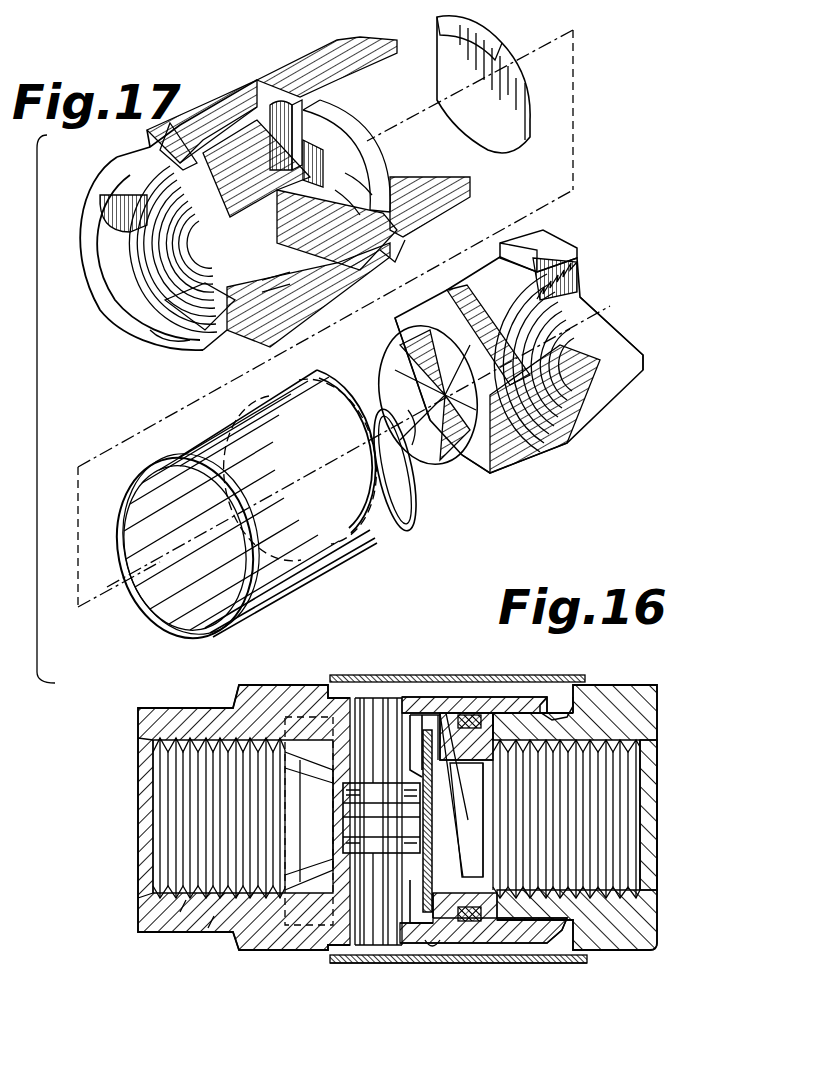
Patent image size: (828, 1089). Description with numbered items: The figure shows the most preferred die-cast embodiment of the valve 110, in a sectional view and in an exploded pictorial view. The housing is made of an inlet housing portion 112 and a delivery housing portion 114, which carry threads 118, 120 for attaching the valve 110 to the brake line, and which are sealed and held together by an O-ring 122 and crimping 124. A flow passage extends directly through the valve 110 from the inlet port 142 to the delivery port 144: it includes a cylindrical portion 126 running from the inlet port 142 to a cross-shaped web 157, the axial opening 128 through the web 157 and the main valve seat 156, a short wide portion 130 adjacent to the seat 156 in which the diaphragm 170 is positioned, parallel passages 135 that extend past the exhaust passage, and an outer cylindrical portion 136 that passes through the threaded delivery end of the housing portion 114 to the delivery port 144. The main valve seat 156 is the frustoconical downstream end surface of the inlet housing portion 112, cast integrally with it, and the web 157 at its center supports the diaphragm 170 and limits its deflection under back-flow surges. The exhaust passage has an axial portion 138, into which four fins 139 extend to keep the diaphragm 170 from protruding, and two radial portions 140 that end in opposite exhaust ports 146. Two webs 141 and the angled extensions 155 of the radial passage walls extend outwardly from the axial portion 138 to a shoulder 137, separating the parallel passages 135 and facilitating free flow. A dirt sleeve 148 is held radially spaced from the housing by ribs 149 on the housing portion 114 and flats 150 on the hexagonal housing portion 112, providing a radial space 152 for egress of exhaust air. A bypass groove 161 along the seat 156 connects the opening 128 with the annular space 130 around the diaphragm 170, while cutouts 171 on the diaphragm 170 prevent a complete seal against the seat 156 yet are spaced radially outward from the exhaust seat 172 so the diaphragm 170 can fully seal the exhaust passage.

In FIG. 16, the valve 110 is at (120, 957).
In FIG. 17, the inlet housing portion 112 is at (606, 250).
In FIG. 16, the inlet housing portion 112 is at (638, 952).
In FIG. 17, the delivery housing portion 114 is at (108, 352).
In FIG. 16, the delivery housing portion 114 is at (238, 692).
In FIG. 17, the threads 118 is at (520, 357).
In FIG. 16, the threads 118 is at (622, 738).
In FIG. 17, the threads 120 is at (125, 295).
In FIG. 16, the threads 120 is at (162, 752).
In FIG. 17, the O-ring 122 is at (408, 538).
In FIG. 16, the O-ring 122 is at (468, 718).
In FIG. 16, the crimping 124 is at (562, 708).
In FIG. 17, the cylindrical portion of flow passage 126 is at (570, 293).
In FIG. 16, the cylindrical portion of flow passage 126 is at (620, 768).
In FIG. 17, the axial opening 128 is at (417, 372).
In FIG. 16, the axial opening 128 is at (440, 832).
In FIG. 16, the short wide portion of flow passage 130 is at (433, 712).
In FIG. 17, the parallel passages 135 is at (143, 282).
In FIG. 16, the parallel passages 135 is at (298, 826).
In FIG. 17, the cylindrical portion of flow passage 136 is at (168, 358).
In FIG. 16, the cylindrical portion of flow passage 136 is at (178, 798).
In FIG. 17, the shoulder 137 is at (395, 262).
In FIG. 16, the shoulder 137 is at (284, 956).
In FIG. 17, the axial portion of exhaust passage 138 is at (345, 173).
In FIG. 16, the axial portion of exhaust passage 138 is at (500, 850).
In FIG. 17, the fins 139 is at (335, 190).
In FIG. 16, the fins 139 is at (373, 855).
In FIG. 17, the radial portions of exhaust passage 140 is at (290, 100).
In FIG. 16, the radial portions of exhaust passage 140 is at (414, 935).
In FIG. 17, the webs 141 is at (207, 147).
In FIG. 16, the webs 141 is at (298, 870).
In FIG. 17, the inlet port 142 is at (640, 362).
In FIG. 16, the inlet port 142 is at (656, 880).
In FIG. 17, the delivery port 144 is at (107, 217).
In FIG. 16, the delivery port 144 is at (293, 882).
In FIG. 17, the exhaust ports 146 is at (278, 100).
In FIG. 16, the exhaust ports 146 is at (360, 698).
In FIG. 17, the dirt sleeve 148 is at (146, 619).
In FIG. 16, the dirt sleeve 148 is at (560, 965).
In FIG. 17, the ribs 149 is at (250, 100).
In FIG. 17, the flats 150 is at (507, 232).
In FIG. 16, the radial space 152 is at (508, 947).
In FIG. 17, the extensions of radial exhaust passage walls 155 is at (262, 280).
In FIG. 16, the extensions of radial exhaust passage walls 155 is at (208, 928).
In FIG. 17, the main valve seat 156 is at (473, 478).
In FIG. 16, the main valve seat 156 is at (470, 800).
In FIG. 17, the cross-shaped web 157 is at (462, 482).
In FIG. 16, the cross-shaped web 157 is at (471, 818).
In FIG. 17, the bypass groove 161 is at (437, 475).
In FIG. 16, the bypass groove 161 is at (433, 947).
In FIG. 17, the diaphragm 170 is at (518, 30).
In FIG. 16, the diaphragm 170 is at (419, 716).
In FIG. 17, the cutouts 171 is at (440, 58).
In FIG. 16, the cutouts 171 is at (434, 730).
In FIG. 17, the exhaust seat 172 is at (300, 187).
In FIG. 16, the exhaust seat 172 is at (500, 825).